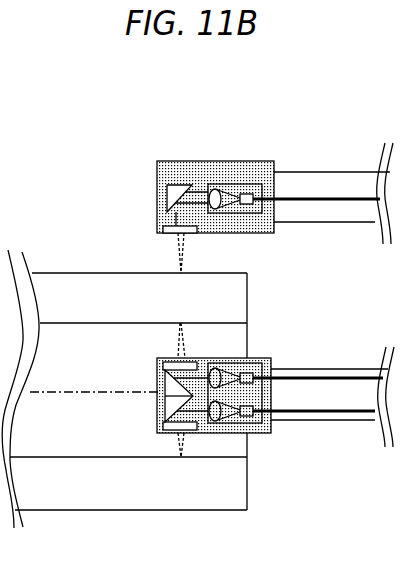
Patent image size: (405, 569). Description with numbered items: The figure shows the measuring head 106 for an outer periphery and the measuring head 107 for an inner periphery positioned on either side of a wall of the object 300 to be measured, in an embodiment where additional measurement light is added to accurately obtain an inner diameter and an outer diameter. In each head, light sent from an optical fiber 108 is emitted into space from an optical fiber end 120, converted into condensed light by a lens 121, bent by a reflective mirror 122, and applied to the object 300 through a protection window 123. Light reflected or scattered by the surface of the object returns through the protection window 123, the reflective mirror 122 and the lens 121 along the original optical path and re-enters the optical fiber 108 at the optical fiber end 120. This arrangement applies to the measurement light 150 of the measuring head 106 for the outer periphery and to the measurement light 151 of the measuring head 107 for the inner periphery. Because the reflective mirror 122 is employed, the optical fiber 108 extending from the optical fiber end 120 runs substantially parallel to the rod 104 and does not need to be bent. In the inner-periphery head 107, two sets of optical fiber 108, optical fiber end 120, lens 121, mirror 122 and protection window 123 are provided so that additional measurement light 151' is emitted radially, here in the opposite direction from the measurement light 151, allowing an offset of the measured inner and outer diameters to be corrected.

The object to be measured 300 is at (70, 278).
The measuring head for an outer periphery 106 is at (158, 160).
The reflective mirror 122 is at (167, 184).
The protection window 123 is at (194, 232).
The lens 121 is at (211, 185).
The optical fiber end 120 is at (252, 194).
The rod 104 is at (318, 172).
The optical fiber 108 is at (298, 200).
The measuring head for an inner periphery 107 is at (257, 433).
The measurement light 150 is at (180, 272).
The measurement light 151 is at (146, 372).
The additional measurement light 151' is at (133, 443).